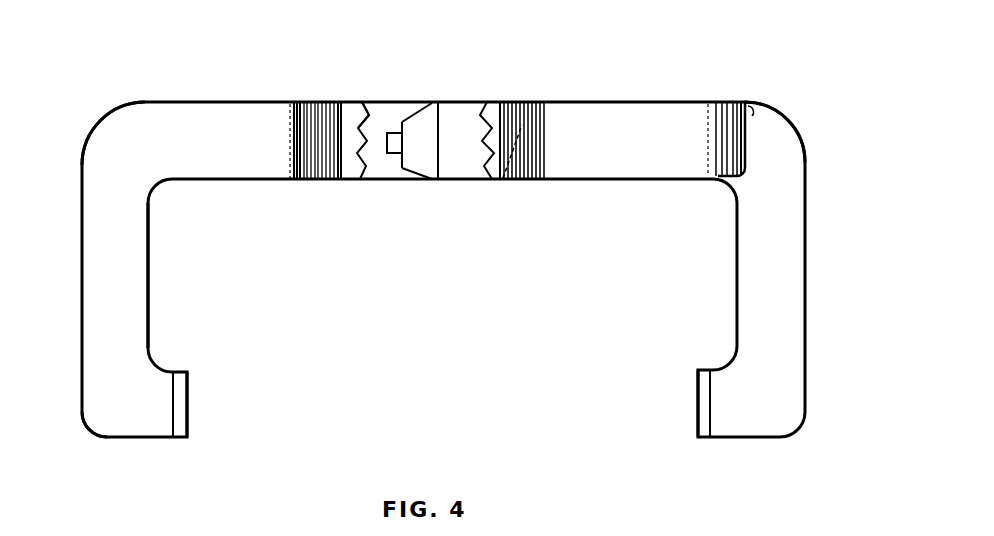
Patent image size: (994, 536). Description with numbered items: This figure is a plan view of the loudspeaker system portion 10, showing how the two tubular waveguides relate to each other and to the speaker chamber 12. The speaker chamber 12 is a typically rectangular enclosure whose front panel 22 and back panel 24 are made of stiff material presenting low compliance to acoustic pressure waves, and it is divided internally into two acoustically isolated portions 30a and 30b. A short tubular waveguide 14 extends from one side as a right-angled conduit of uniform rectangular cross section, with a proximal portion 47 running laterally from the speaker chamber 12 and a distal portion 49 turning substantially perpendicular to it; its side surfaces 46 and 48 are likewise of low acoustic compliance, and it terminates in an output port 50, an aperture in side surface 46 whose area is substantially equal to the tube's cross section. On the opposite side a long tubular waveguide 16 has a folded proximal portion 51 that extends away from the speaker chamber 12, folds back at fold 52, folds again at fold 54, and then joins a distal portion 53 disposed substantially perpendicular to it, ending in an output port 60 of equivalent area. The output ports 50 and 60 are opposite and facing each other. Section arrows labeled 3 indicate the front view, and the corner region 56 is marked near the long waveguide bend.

The section line 3 is at (43, 165).
The loudspeaker system portion 10 is at (790, 107).
The speaker chamber 12 is at (460, 163).
The short tubular waveguide 14 is at (225, 113).
The long tubular waveguide 16 is at (627, 113).
The front panel 22 is at (366, 182).
The back panel 24 is at (357, 100).
The first acoustically isolated portion 30a is at (400, 113).
The second acoustically isolated portion 30b is at (478, 121).
The side surface 46 is at (150, 268).
The proximal portion 47 is at (305, 62).
The side surface 48 is at (142, 100).
The distal portion 49 is at (78, 175).
The output port 50 is at (180, 395).
The proximal portion 51 is at (732, 60).
The fold 52 is at (757, 116).
The distal portion 53 is at (810, 175).
The fold 54 is at (497, 181).
The right curved corner 56 is at (780, 148).
The output port 60 is at (703, 395).